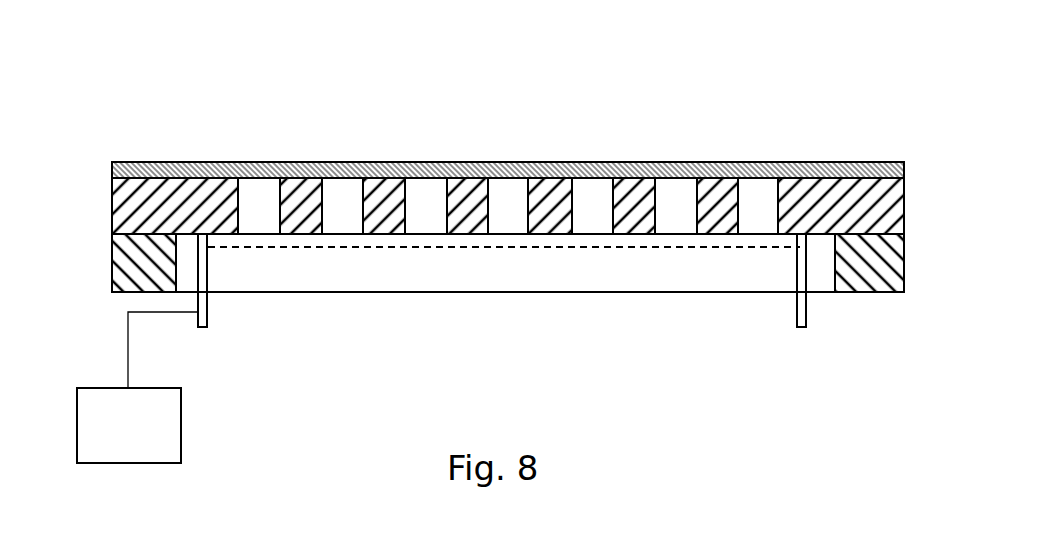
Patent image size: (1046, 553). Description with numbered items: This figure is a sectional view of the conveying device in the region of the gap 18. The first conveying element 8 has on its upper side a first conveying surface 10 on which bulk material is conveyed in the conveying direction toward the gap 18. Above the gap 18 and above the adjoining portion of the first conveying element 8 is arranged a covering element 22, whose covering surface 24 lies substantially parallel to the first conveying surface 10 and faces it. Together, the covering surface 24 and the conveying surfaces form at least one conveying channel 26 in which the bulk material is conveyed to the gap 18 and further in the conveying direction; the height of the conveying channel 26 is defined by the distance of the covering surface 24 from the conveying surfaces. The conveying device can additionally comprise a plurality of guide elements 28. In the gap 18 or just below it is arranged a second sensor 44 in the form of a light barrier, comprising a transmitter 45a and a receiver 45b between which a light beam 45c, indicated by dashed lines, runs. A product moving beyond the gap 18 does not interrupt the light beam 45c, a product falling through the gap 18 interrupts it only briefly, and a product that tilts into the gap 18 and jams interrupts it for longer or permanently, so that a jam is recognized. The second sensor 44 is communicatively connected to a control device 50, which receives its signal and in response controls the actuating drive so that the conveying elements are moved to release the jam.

The first conveying element 8 is at (120, 213).
The first conveying surface 10 is at (507, 224).
The gap 18 is at (429, 274).
The covering element 22 is at (808, 162).
The covering surface 24 is at (753, 178).
The conveying channel 26 is at (258, 197).
The guide elements 28 is at (386, 197).
The second sensor 44 is at (810, 292).
The transmitter 45a is at (208, 308).
The receiver 45b is at (795, 318).
The light beam 45c is at (600, 247).
The control device 50 is at (162, 443).